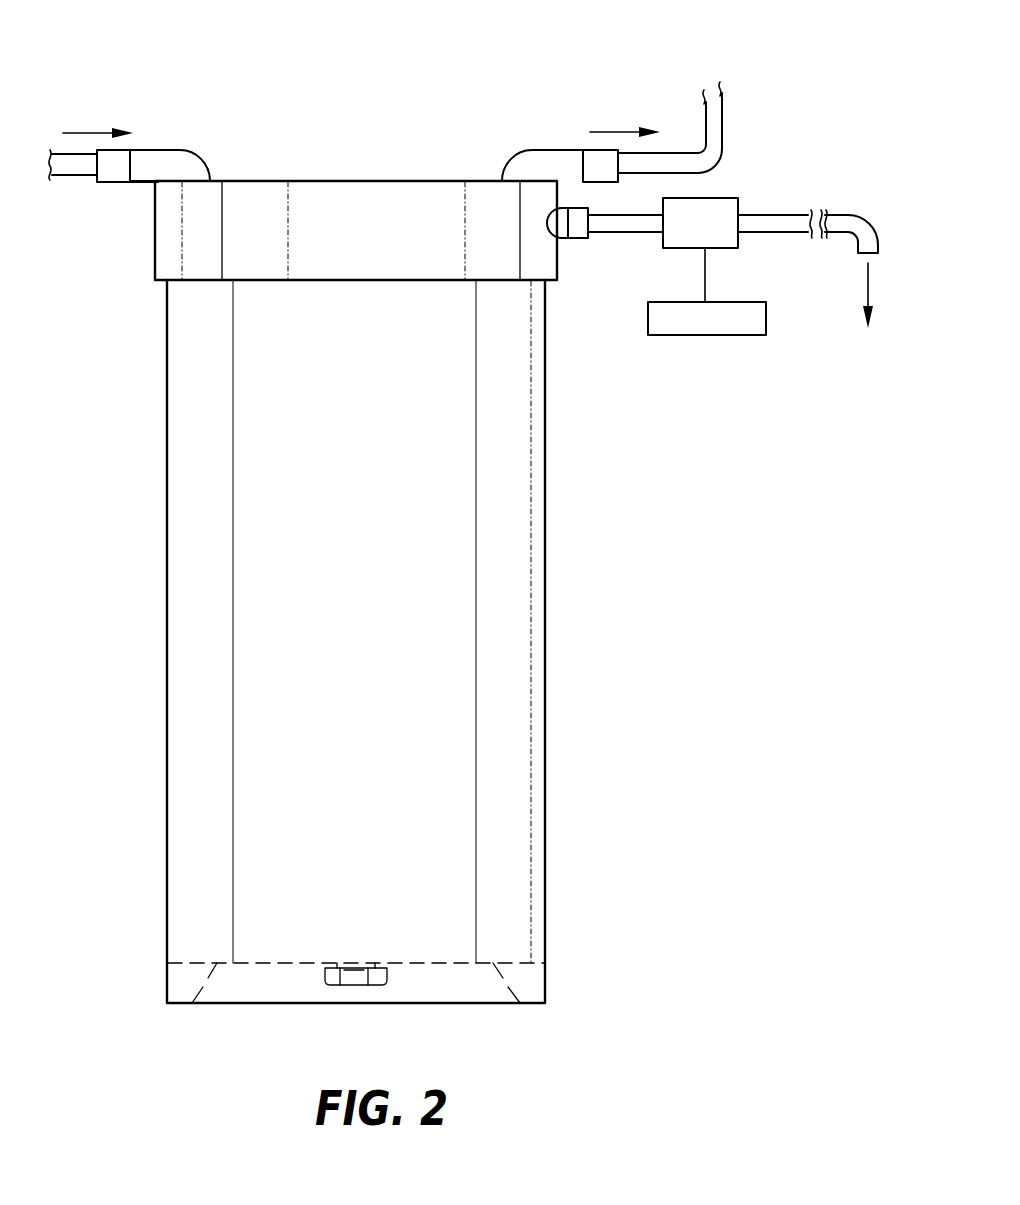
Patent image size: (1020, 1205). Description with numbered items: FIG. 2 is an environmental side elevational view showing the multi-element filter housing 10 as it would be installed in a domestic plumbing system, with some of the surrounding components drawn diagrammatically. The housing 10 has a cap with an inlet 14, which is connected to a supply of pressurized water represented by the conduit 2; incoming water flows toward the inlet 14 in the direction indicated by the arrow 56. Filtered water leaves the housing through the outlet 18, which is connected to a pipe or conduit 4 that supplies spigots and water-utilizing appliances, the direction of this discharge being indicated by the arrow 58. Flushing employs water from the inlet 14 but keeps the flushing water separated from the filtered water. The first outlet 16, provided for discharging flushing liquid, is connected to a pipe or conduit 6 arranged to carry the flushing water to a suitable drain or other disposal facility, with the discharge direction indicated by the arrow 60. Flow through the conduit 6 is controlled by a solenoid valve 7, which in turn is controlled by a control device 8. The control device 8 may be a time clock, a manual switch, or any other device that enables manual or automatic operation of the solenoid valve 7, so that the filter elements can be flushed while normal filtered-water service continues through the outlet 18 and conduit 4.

The multi-element filter housing 10 is at (438, 88).
The conduit 2 is at (75, 172).
The inlet 14 is at (173, 156).
The arrow 56 is at (88, 133).
The outlet 18 is at (548, 160).
The arrow 58 is at (618, 132).
The conduit 4 is at (716, 116).
The first outlet 16 is at (563, 230).
The conduit 6 is at (616, 228).
The solenoid valve 7 is at (728, 198).
The control device 8 is at (722, 335).
The arrow 60 is at (864, 292).